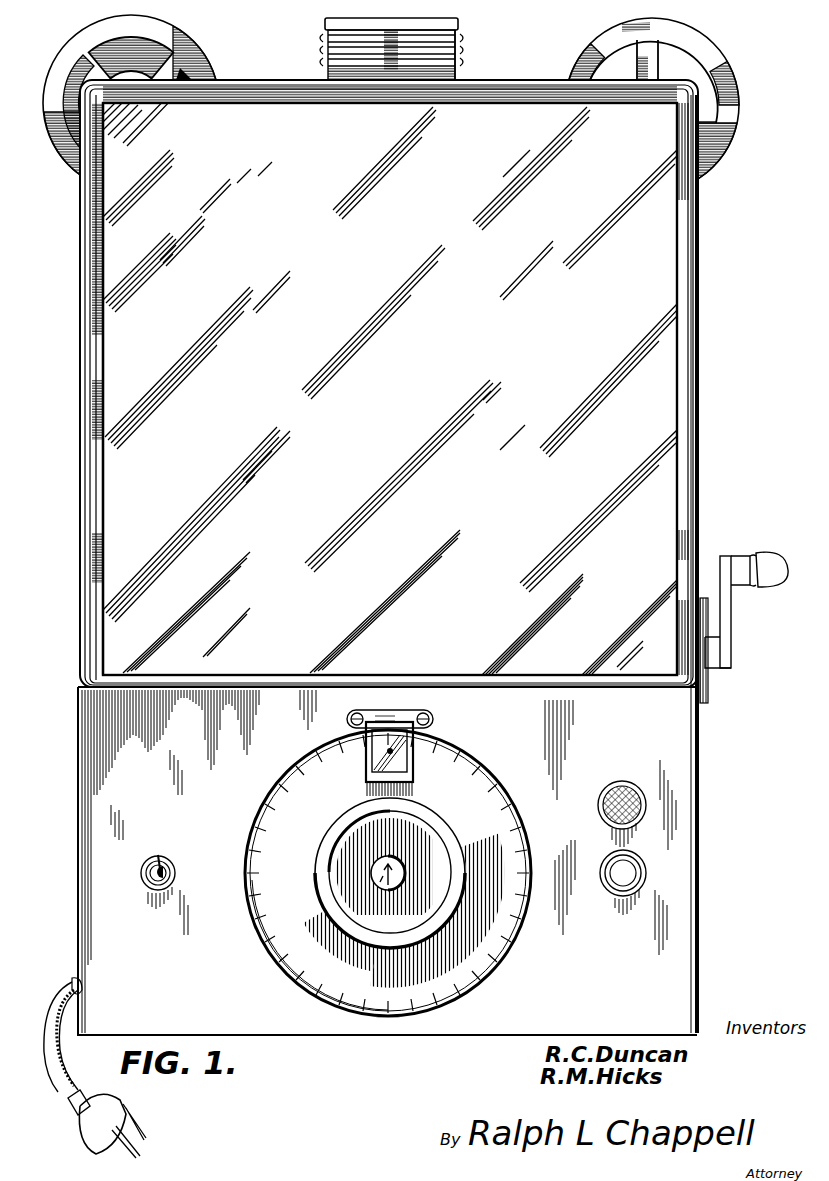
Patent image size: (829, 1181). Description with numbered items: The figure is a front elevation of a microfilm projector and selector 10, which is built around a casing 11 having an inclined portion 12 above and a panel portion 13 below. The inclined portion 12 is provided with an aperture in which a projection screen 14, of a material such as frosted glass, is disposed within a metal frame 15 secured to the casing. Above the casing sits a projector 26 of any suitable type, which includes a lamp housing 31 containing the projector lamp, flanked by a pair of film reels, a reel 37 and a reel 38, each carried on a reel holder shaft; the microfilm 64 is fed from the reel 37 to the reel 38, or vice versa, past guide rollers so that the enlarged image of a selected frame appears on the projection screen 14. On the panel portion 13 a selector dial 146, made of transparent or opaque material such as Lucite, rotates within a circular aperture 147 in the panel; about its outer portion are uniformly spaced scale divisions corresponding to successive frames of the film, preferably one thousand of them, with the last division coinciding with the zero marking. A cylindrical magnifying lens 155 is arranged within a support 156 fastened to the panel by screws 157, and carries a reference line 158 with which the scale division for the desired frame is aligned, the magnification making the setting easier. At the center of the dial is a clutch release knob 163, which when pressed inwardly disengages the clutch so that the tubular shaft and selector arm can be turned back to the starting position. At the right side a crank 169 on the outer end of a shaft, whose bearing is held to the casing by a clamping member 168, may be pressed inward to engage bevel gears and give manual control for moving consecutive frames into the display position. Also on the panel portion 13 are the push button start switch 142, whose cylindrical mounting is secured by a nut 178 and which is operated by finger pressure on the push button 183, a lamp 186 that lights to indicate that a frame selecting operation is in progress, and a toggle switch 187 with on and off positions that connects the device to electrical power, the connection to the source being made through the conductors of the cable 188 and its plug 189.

The microfilm projector and selector 10 is at (711, 355).
The casing 11 is at (78, 794).
The inclined portion 12 is at (82, 397).
The panel portion 13 is at (274, 712).
The projection screen 14 is at (648, 493).
The metal frame 15 is at (682, 207).
The projector 26 is at (321, 63).
The lamp housing 31 is at (457, 68).
The reel 37 is at (100, 48).
The reel 38 is at (588, 52).
The microfilm 64 is at (131, 58).
The push button start switch 142 is at (594, 886).
The selector dial 146 is at (294, 812).
The circular aperture 147 is at (474, 980).
The cylindrical magnifying lens 155 is at (368, 745).
The support 156 is at (398, 712).
The screws 157 is at (352, 714).
The reference line 158 is at (390, 744).
The clutch release knob 163 is at (404, 876).
The clamping member 168 is at (708, 685).
The crank 169 is at (728, 610).
The nut 178 is at (606, 859).
The push button 183 is at (632, 865).
The lamp 186 is at (624, 790).
The toggle switch 187 is at (158, 858).
The cable 188 is at (60, 1059).
The plug 189 is at (98, 1140).